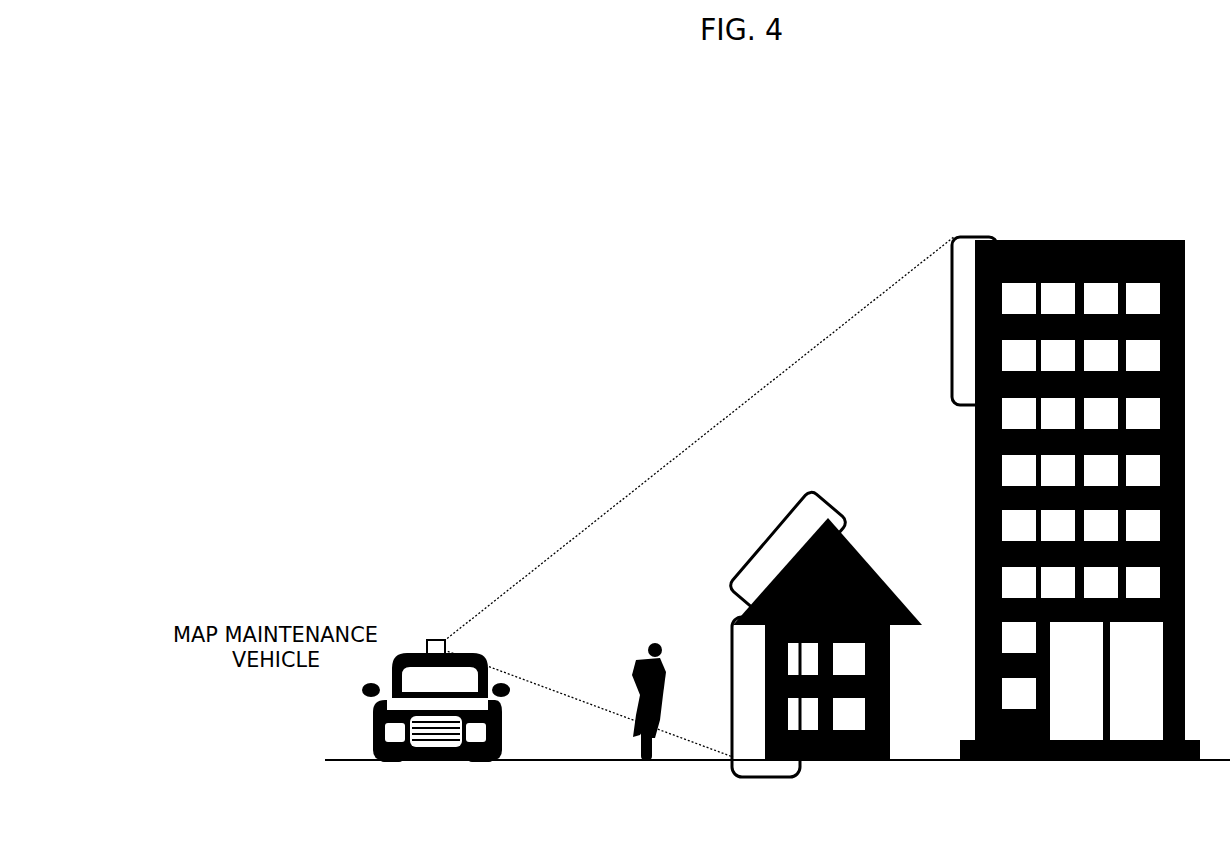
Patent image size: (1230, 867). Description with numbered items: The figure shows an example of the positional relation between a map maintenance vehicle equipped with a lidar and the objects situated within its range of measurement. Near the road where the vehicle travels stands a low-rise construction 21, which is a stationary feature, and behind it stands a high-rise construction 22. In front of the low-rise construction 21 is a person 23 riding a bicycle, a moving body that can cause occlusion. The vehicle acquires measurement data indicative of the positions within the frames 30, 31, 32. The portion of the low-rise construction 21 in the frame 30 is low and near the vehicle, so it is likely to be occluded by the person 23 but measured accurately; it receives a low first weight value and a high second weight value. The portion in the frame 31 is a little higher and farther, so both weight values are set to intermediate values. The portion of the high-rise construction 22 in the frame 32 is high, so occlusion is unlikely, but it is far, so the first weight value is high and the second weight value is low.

The low-rise construction 21 is at (881, 568).
The high-rise construction 22 is at (1093, 240).
The person 23 is at (656, 645).
The frame 30 is at (731, 715).
The frame 31 is at (800, 500).
The frame 32 is at (952, 303).